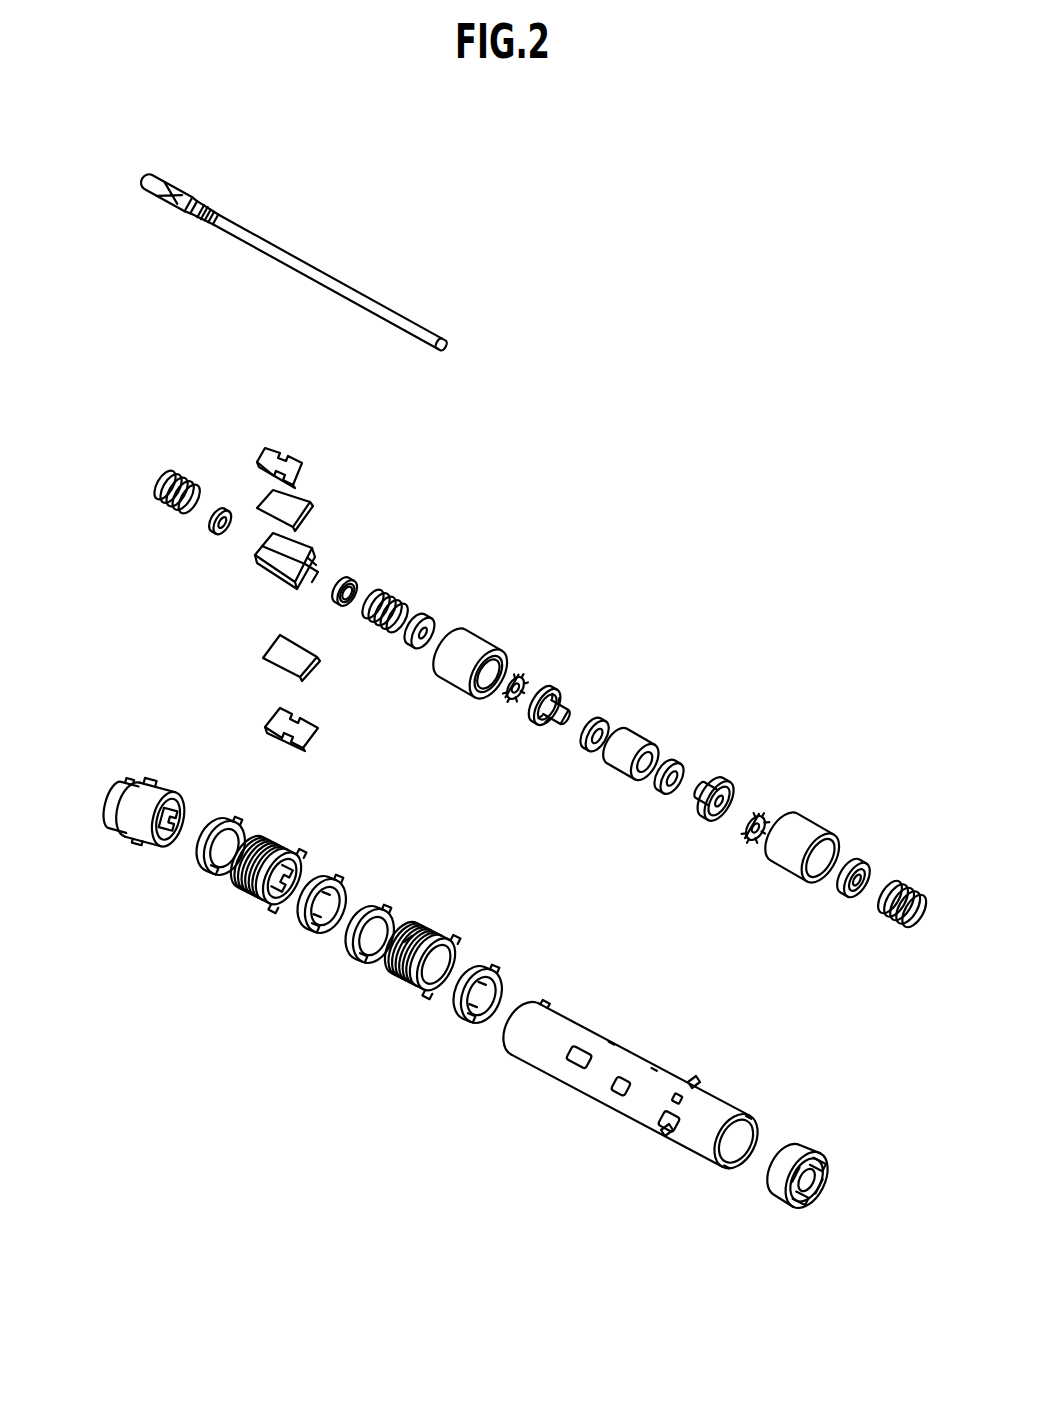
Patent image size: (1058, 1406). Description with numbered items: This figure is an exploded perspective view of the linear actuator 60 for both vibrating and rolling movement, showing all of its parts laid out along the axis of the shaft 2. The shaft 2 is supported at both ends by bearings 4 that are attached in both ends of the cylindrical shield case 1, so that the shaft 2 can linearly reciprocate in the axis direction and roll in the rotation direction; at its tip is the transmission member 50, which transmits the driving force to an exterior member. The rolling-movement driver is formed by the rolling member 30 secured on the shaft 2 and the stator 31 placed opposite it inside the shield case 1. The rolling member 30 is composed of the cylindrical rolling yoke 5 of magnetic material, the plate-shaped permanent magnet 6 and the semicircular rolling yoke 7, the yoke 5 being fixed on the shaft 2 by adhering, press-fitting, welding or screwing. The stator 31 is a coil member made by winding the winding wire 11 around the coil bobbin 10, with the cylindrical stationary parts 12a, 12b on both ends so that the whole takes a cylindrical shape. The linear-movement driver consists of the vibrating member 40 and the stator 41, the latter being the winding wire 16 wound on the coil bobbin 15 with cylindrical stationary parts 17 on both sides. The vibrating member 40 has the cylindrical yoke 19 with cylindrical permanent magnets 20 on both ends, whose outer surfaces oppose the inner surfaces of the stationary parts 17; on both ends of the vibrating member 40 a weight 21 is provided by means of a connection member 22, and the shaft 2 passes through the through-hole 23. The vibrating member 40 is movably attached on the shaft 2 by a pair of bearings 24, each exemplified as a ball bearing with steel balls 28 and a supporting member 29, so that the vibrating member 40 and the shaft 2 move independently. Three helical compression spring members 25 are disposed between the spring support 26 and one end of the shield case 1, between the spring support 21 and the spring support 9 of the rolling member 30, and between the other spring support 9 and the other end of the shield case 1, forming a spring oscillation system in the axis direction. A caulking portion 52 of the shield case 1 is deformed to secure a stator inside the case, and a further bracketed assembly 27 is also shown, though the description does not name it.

The shield case 1 is at (541, 1040).
The shaft 2 is at (370, 305).
The bearings 4 is at (138, 838).
The cylindrical rolling yoke 5 is at (310, 558).
The plate-shaped permanent magnet 6 is at (308, 500).
The semicircular rolling yoke 7 is at (277, 461).
The spring support 9 is at (216, 512).
The coil bobbin 10 is at (282, 898).
The winding wire 11 is at (257, 885).
The cylindrical stationary part 12a is at (198, 862).
The cylindrical stationary part 12b is at (324, 928).
The coil bobbin 15 is at (432, 996).
The winding wire 16 is at (406, 962).
The cylindrical stationary parts 17 is at (363, 951).
The cylindrical yoke 19 is at (652, 737).
The cylindrical permanent magnets 20 is at (612, 726).
The weight 21 is at (485, 645).
The connection member 22 is at (553, 698).
The through-hole 23 is at (686, 779).
The bearings 24 is at (517, 680).
The spring member 25 is at (170, 478).
The spring support 26 is at (424, 625).
The assembly 27 is at (883, 708).
The steel balls 28 is at (508, 695).
The supporting member 29 is at (517, 700).
The rolling member 30 is at (352, 398).
The stator 31 is at (283, 1005).
The vibrating member 40 is at (726, 685).
The stator 41 is at (443, 1096).
The transmission member 50 is at (187, 157).
The caulking portion 52 is at (697, 1086).
The linear actuator 60 is at (83, 100).